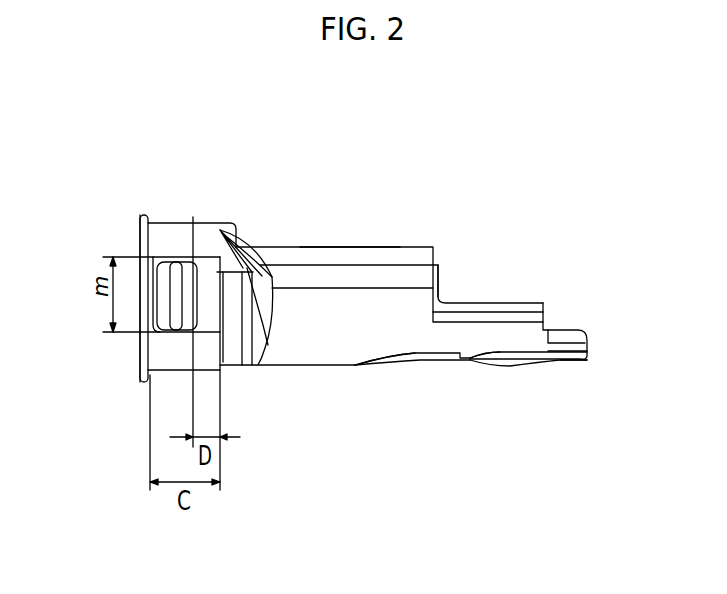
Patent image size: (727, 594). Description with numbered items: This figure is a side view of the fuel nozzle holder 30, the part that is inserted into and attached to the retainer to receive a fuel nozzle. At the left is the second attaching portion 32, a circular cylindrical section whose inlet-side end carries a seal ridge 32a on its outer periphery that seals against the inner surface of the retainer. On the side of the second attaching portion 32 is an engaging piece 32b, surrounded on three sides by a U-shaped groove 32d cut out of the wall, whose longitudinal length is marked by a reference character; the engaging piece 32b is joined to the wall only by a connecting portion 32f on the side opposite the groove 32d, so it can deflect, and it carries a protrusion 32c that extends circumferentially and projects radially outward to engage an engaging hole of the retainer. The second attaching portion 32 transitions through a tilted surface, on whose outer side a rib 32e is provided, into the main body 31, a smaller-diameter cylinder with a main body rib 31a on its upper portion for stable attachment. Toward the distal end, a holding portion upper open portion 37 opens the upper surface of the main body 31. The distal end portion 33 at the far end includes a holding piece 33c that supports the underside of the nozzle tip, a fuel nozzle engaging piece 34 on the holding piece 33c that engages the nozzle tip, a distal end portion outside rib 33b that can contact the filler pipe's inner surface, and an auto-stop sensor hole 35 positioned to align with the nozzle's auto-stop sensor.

The fuel nozzle holder 30 is at (133, 388).
The main body 31 is at (352, 340).
The main body rib 31a is at (348, 255).
The second attaching portion 32 is at (207, 371).
The seal ridge 32a is at (137, 234).
The engaging piece 32b is at (250, 238).
The protrusion 32c is at (183, 288).
The groove 32d is at (168, 257).
The rib 32e is at (215, 270).
The connecting portion 32f is at (217, 315).
The distal end portion 33 is at (520, 340).
The distal end portion outside rib 33b is at (500, 365).
The holding piece 33c is at (577, 340).
The fuel nozzle engaging piece 34 is at (565, 330).
The auto-stop sensor hole 35 is at (437, 357).
The holding portion upper open portion 37 is at (472, 280).